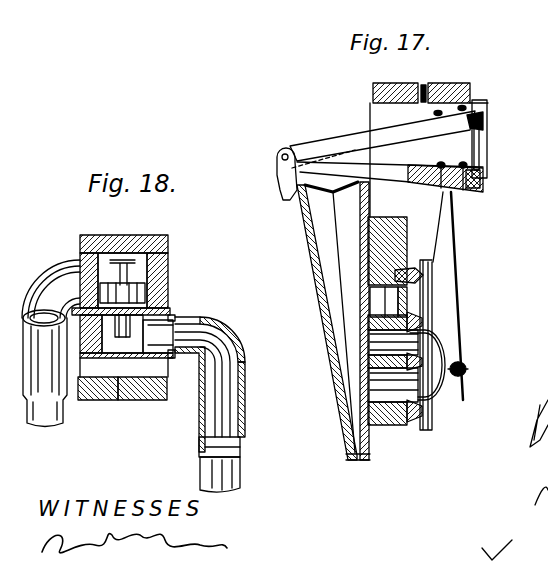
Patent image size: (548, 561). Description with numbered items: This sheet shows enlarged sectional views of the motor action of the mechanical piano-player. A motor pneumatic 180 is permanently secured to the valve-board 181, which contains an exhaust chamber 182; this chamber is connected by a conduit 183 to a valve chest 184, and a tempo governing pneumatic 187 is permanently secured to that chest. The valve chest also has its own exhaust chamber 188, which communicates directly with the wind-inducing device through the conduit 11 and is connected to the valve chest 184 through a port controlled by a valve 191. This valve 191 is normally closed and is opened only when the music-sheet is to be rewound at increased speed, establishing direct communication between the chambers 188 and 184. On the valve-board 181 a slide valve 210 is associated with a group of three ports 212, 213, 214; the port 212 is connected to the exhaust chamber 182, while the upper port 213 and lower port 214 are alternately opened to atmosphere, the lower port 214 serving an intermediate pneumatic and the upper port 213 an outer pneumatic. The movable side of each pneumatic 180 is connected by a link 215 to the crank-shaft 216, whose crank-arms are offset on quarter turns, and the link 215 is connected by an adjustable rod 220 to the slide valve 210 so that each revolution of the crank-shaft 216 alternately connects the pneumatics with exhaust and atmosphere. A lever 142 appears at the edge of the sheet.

In FIG. 18, the conduit 11 is at (240, 480).
In FIG. 17, the lever 142 is at (523, 452).
In FIG. 17, the motor pneumatic 180 is at (360, 263).
In FIG. 17, the valve-board 181 is at (390, 250).
In FIG. 17, the exhaust chamber 182 is at (383, 345).
In FIG. 18, the conduit 183 is at (53, 413).
In FIG. 18, the valve chest 184 is at (138, 273).
In FIG. 18, the tempo governing pneumatic 187 is at (123, 372).
In FIG. 18, the exhaust chamber 188 is at (165, 396).
In FIG. 18, the valve 191 is at (78, 270).
In FIG. 17, the slide valve 210 is at (450, 387).
In FIG. 17, the port 212 is at (445, 340).
In FIG. 17, the upper port 213 is at (390, 302).
In FIG. 17, the lower port 214 is at (413, 388).
In FIG. 17, the link 215 is at (377, 168).
In FIG. 17, the crank-shaft 216 is at (484, 150).
In FIG. 17, the adjustable rod 220 is at (453, 272).